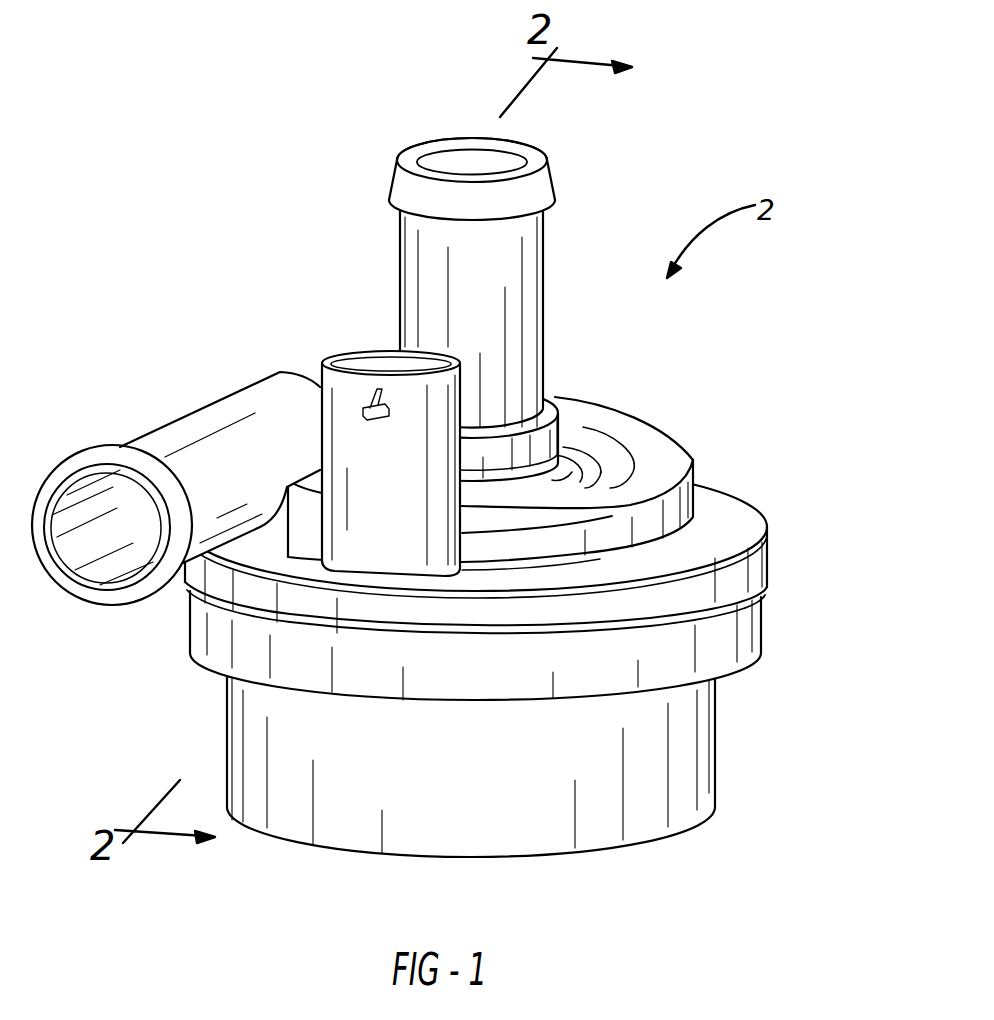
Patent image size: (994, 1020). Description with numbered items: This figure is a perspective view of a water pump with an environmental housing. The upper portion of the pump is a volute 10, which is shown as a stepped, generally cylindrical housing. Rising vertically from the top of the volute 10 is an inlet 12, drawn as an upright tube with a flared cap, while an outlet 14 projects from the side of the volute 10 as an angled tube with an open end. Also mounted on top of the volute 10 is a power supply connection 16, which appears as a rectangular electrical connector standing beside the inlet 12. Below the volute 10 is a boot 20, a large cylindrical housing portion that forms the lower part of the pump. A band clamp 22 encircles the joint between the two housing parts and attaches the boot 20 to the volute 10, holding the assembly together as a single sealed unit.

The volute 10 is at (630, 445).
The inlet 12 is at (540, 148).
The outlet 14 is at (84, 448).
The power supply connection 16 is at (358, 357).
The boot 20 is at (650, 785).
The band clamp 22 is at (733, 583).